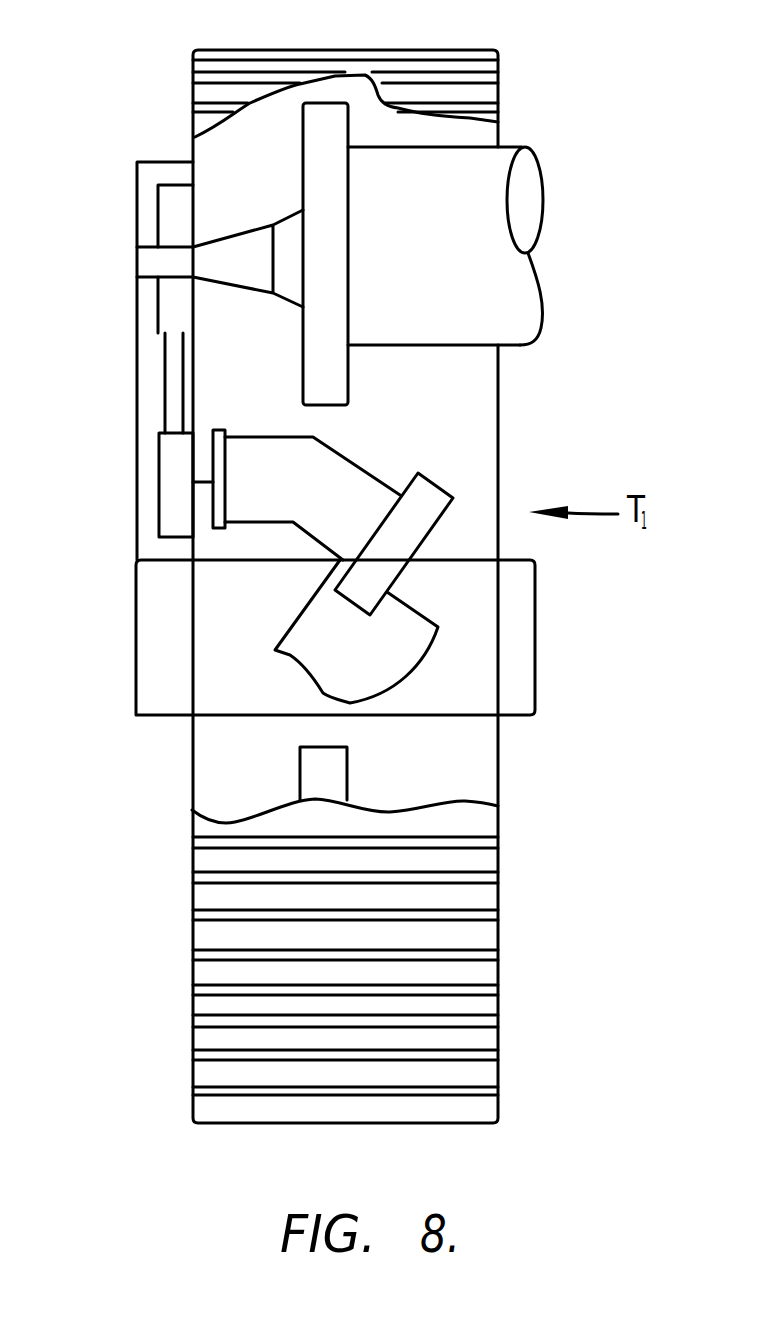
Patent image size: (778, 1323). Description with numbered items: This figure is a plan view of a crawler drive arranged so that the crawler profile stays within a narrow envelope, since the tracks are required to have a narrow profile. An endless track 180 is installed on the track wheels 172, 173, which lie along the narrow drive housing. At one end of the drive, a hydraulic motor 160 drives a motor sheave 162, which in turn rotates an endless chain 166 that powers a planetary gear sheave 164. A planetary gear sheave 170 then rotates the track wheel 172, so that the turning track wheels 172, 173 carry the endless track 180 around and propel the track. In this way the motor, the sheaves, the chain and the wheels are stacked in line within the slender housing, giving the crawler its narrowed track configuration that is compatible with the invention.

The hydraulic motor 160 is at (375, 478).
The motor sheave 162 is at (159, 497).
The planetary gear sheave 164 is at (193, 333).
The endless chain 166 is at (165, 401).
The planetary gear sheave 170 is at (550, 213).
The track wheel 172 is at (328, 125).
The track wheel 173 is at (347, 776).
The endless track 180 is at (420, 935).